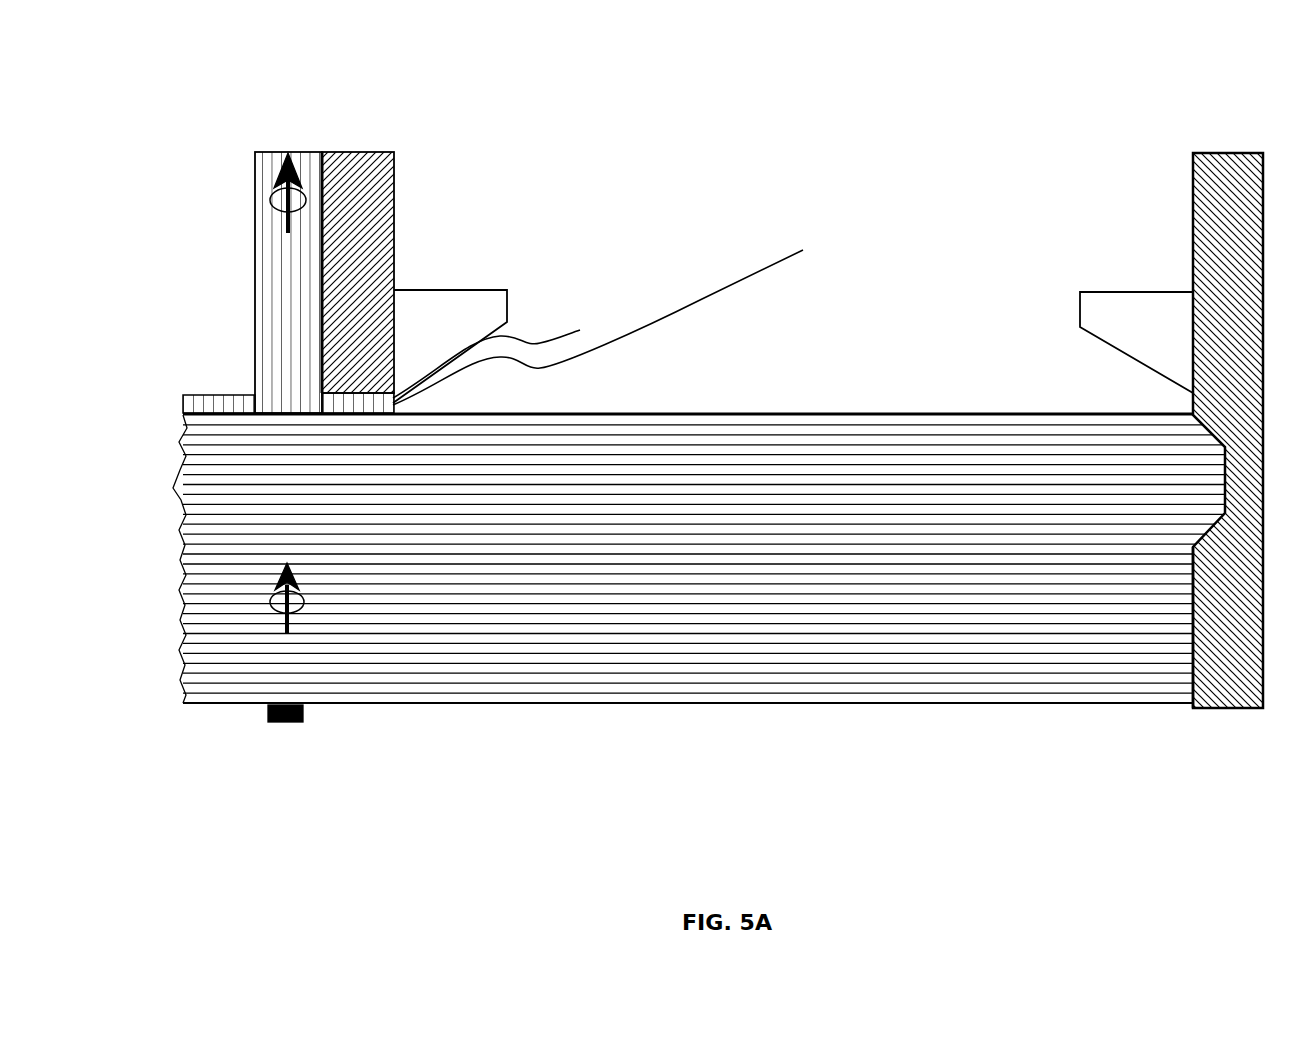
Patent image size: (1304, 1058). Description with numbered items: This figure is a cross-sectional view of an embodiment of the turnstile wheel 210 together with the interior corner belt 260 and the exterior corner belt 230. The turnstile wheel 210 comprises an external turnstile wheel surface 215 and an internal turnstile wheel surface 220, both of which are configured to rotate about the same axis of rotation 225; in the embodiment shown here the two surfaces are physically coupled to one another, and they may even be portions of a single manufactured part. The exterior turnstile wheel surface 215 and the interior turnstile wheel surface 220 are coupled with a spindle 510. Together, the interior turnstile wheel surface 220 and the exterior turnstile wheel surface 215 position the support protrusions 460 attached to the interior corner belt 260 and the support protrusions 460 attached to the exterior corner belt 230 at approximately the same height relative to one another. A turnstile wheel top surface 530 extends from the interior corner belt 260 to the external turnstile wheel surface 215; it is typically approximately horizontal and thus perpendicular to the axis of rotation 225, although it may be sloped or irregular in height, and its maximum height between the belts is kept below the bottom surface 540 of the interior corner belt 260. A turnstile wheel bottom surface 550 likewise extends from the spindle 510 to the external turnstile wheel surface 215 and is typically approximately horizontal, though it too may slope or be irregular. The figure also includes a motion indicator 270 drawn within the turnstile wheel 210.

The turnstile wheel 210 is at (761, 413).
The external turnstile wheel surface 215 is at (1190, 645).
The internal turnstile wheel surface 220 is at (328, 254).
The axis of rotation 225 is at (288, 153).
The exterior corner belt 230 is at (1193, 197).
The interior corner belt 260 is at (394, 175).
The substrate motion 270 is at (290, 560).
The support protrusions 460 is at (483, 290).
The spindle 510 is at (303, 713).
The turnstile wheel top surface 530 is at (665, 413).
The bottom surface of the interior corner belt 540 is at (511, 353).
The turnstile wheel bottom surface 550 is at (778, 704).